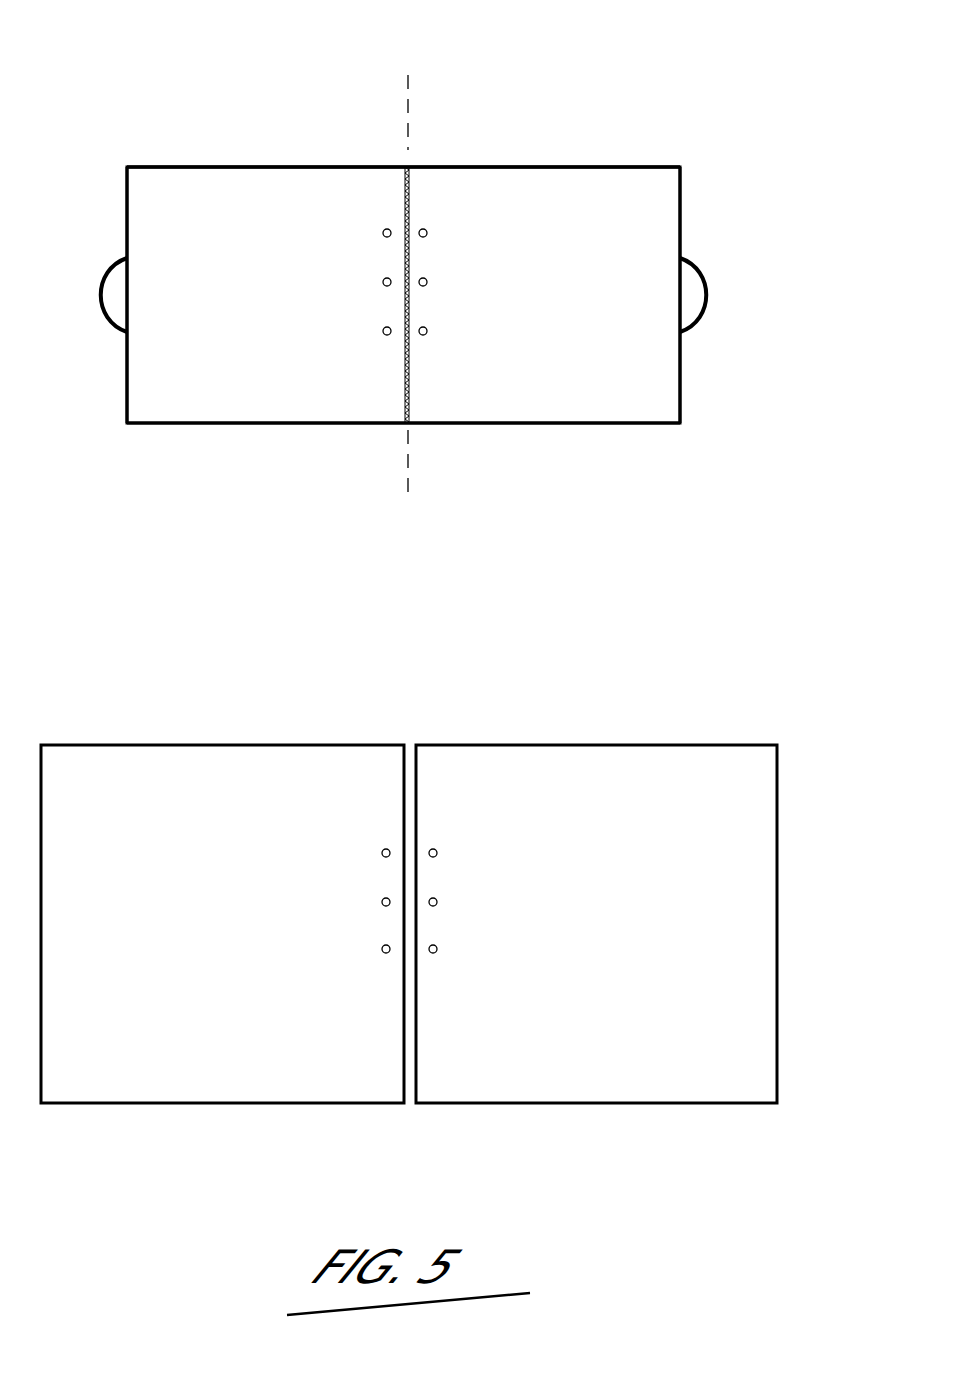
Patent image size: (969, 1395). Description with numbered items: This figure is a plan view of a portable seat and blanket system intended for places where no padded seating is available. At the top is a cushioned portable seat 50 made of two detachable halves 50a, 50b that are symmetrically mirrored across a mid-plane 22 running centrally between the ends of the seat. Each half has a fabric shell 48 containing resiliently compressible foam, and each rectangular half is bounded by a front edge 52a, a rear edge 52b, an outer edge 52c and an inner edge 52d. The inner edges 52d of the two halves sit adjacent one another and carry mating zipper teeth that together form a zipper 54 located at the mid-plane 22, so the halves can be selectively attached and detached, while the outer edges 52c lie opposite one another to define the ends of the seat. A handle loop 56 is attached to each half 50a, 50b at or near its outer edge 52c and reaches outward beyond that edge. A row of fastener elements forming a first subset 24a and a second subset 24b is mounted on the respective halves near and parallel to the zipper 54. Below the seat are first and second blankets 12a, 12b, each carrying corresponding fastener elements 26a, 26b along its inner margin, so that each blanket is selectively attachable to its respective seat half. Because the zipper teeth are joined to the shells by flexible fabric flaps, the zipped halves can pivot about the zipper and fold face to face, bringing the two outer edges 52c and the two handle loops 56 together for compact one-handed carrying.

The first blanket 12a is at (208, 865).
The second blanket 12b is at (598, 865).
The mid-plane 22 is at (411, 97).
The first subset of fastener elements 24a is at (385, 326).
The second subset of fastener elements 24b is at (425, 326).
The first panel apertures 26a is at (384, 945).
The second panel apertures 26b is at (435, 945).
The fabric shell 48 is at (157, 185).
The cushioned portable seat 50 is at (407, 268).
The first half of the portable seat 50a is at (258, 255).
The second half of the portable seat 50b is at (530, 250).
The front edge 52a is at (213, 428).
The rear edge 52b is at (243, 167).
The outer edge 52c is at (125, 393).
The inner edge 52d is at (410, 352).
The zipper 54 is at (409, 359).
The handle loop 56 is at (100, 318).